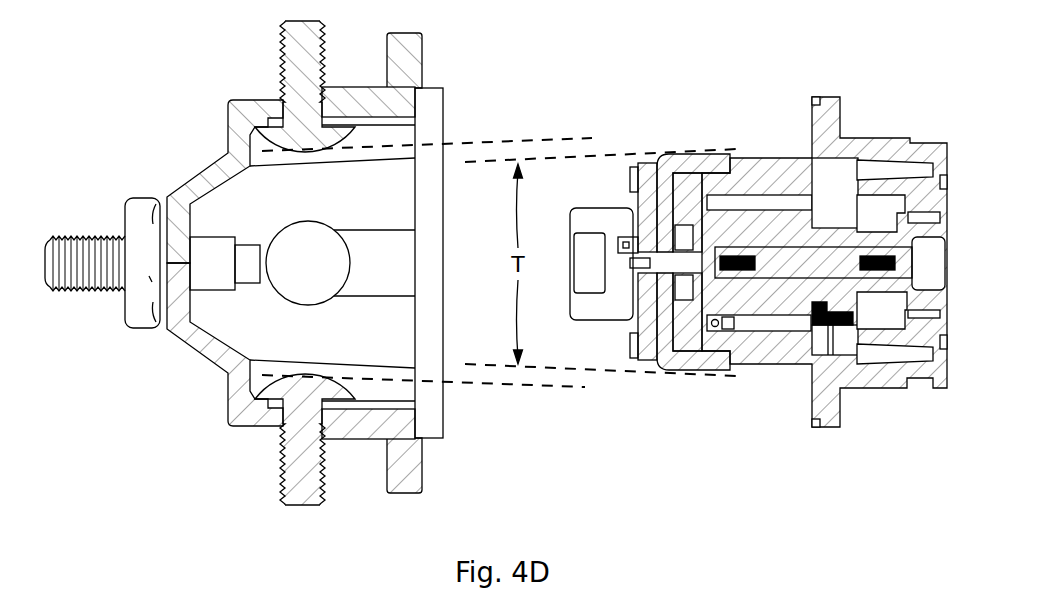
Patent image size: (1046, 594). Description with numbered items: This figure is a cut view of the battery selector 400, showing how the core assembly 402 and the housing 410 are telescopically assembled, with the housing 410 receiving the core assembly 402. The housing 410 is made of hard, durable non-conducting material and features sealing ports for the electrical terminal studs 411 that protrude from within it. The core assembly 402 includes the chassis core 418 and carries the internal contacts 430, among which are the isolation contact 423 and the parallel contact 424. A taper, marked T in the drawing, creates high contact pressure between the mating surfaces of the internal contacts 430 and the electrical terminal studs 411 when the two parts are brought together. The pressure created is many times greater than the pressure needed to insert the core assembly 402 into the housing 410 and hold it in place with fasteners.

The battery selector 400 is at (87, 85).
The core assembly 402 is at (781, 94).
The housing 410 is at (181, 386).
The electrical terminal studs 411 is at (282, 80).
The chassis core 418 is at (779, 372).
The isolation contact 423 is at (705, 153).
The parallel contact 424 is at (712, 378).
The internal contacts 430 is at (680, 145).